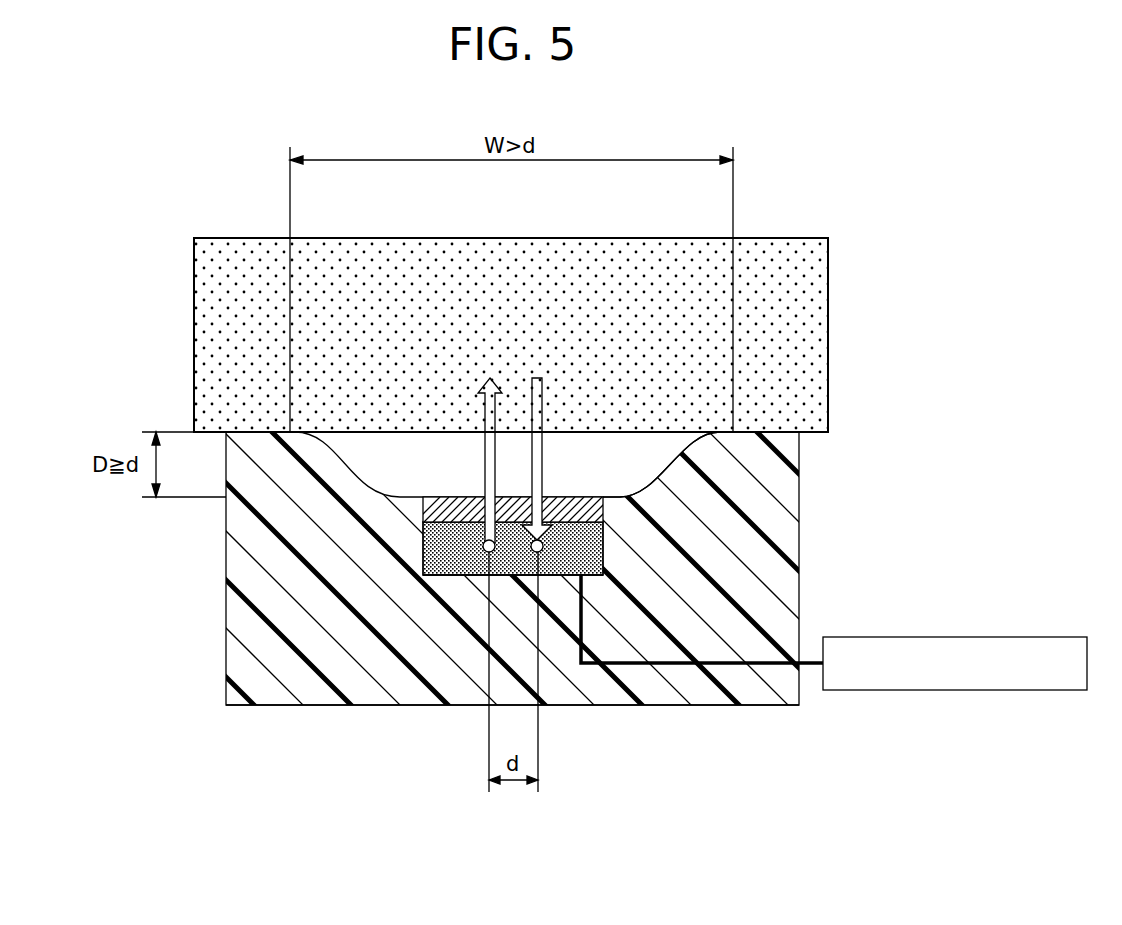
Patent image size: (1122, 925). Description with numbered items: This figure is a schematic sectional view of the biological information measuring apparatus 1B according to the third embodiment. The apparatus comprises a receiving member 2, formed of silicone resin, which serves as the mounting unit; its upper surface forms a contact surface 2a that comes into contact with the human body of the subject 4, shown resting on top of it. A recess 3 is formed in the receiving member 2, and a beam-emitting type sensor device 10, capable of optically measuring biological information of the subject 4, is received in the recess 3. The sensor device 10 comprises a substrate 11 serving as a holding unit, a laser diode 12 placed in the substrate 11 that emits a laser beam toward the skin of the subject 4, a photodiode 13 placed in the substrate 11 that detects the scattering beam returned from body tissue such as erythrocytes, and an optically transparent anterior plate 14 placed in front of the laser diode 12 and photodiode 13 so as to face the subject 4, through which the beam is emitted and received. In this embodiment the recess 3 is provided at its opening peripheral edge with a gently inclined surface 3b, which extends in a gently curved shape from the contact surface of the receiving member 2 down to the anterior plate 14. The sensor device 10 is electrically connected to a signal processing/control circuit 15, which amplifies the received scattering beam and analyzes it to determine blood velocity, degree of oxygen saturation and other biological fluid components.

The biological information measuring apparatus 1B is at (663, 725).
The receiving member 2 is at (794, 521).
The contact surface 2a is at (759, 430).
The recess 3 is at (423, 516).
The inclined surface 3b is at (672, 470).
The subject 4 is at (818, 327).
The beam-emitting type sensor device 10 is at (420, 568).
The substrate 11 is at (423, 545).
The laser diode 12 is at (489, 553).
The photodiode 13 is at (541, 553).
The anterior plate 14 is at (605, 511).
The signal processing/control circuit 15 is at (926, 636).